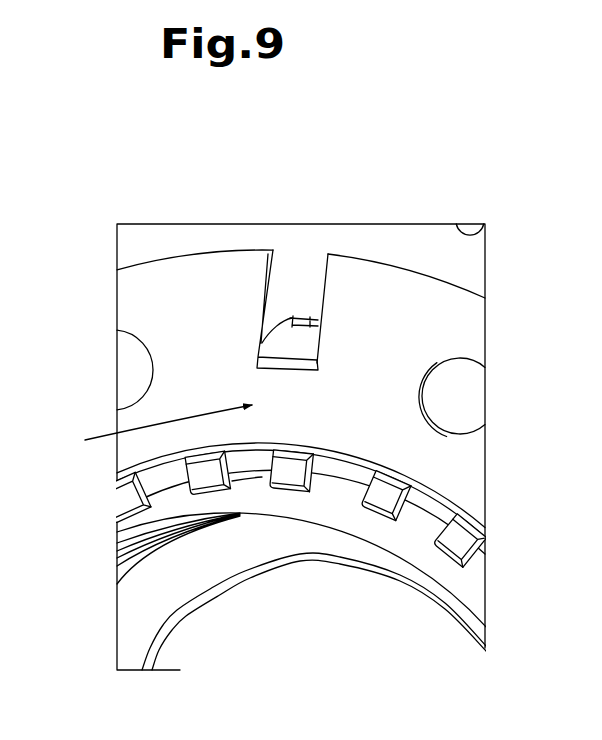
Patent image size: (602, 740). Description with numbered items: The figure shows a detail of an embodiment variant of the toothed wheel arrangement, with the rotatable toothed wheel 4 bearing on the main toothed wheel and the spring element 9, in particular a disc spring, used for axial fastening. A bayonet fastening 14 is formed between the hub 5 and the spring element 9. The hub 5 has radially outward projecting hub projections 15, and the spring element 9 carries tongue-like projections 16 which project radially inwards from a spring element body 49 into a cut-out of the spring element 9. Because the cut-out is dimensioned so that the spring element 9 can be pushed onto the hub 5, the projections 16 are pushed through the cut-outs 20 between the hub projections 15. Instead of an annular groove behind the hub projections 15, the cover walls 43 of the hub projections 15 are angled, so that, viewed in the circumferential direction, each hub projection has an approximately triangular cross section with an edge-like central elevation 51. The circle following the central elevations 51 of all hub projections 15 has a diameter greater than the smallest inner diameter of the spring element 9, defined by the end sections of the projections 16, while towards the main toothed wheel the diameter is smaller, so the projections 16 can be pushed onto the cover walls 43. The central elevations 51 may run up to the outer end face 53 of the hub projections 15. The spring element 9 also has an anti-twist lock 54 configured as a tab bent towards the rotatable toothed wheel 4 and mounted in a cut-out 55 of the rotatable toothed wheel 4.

The rotatable toothed wheel 4 is at (421, 260).
The hub 5 is at (432, 579).
The spring element 9 is at (400, 369).
The bayonet fastening 14 is at (218, 492).
The hub projections 15 is at (335, 495).
The projections 16 is at (452, 496).
The cut-outs 20 is at (321, 546).
The cover walls 43 is at (382, 464).
The spring element body 49 is at (154, 430).
The central elevation 51 is at (345, 447).
The outer end face 53 is at (244, 483).
The anti-twist lock 54 is at (292, 348).
The cut-out 55 is at (310, 320).